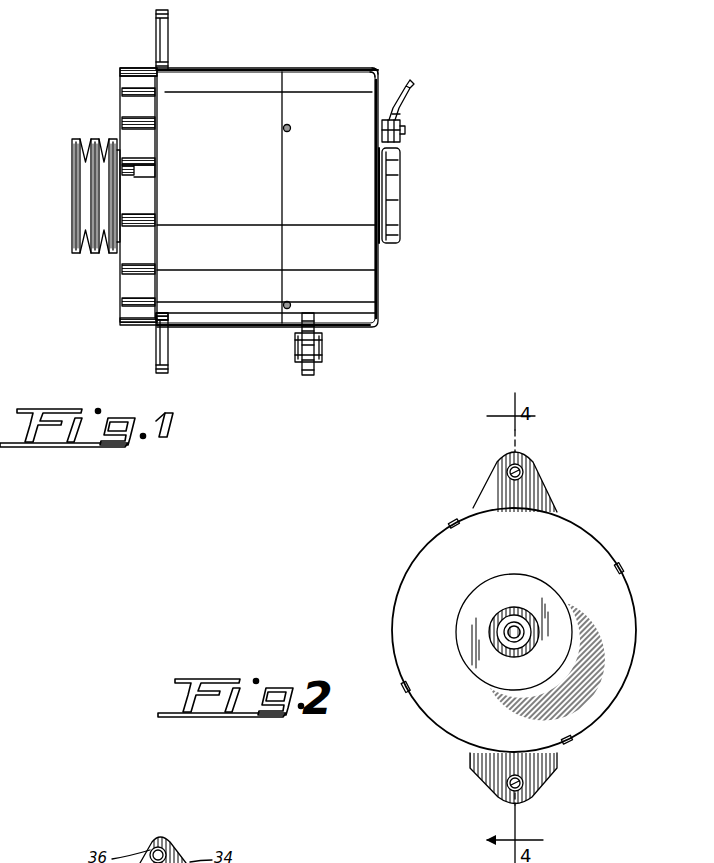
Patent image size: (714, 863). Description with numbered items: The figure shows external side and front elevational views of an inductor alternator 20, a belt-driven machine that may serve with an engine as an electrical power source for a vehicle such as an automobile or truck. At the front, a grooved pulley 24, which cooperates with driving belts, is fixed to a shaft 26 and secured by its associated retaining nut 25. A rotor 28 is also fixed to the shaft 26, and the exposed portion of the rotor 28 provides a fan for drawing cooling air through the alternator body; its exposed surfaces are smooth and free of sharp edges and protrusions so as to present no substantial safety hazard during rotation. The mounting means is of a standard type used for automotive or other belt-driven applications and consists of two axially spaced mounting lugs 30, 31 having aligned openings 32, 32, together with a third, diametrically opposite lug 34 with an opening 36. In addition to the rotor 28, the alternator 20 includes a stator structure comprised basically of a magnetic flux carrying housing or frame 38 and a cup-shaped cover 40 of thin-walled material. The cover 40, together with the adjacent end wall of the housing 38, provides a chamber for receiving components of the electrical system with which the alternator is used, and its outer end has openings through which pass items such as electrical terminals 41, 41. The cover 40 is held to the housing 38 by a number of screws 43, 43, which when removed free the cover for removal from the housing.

In FIG. 1, the inductor alternator 20 is at (232, 58).
In FIG. 2, the inductor alternator 20 is at (602, 524).
In FIG. 1, the grooved pulley 24 is at (72, 140).
In FIG. 2, the grooved pulley 24 is at (478, 598).
In FIG. 2, the retaining nut 25 is at (490, 628).
In FIG. 2, the shaft 26 is at (506, 635).
In FIG. 1, the rotor 28 is at (120, 72).
In FIG. 2, the rotor 28 is at (622, 604).
In FIG. 1, the mounting lug 30 is at (168, 364).
In FIG. 2, the mounting lug 30 is at (538, 783).
In FIG. 1, the mounting lug 31 is at (322, 365).
In FIG. 2, the opening 32 is at (506, 783).
In FIG. 1, the lug 34 is at (168, 26).
In FIG. 2, the lug 34 is at (538, 480).
In FIG. 2, the opening 36 is at (506, 473).
In FIG. 1, the housing 38 is at (253, 74).
In FIG. 1, the cup-shaped cover 40 is at (352, 74).
In FIG. 1, the electrical terminal 41 is at (400, 128).
In FIG. 1, the screw 43 is at (291, 126).
In FIG. 2, the screw 43 is at (450, 522).